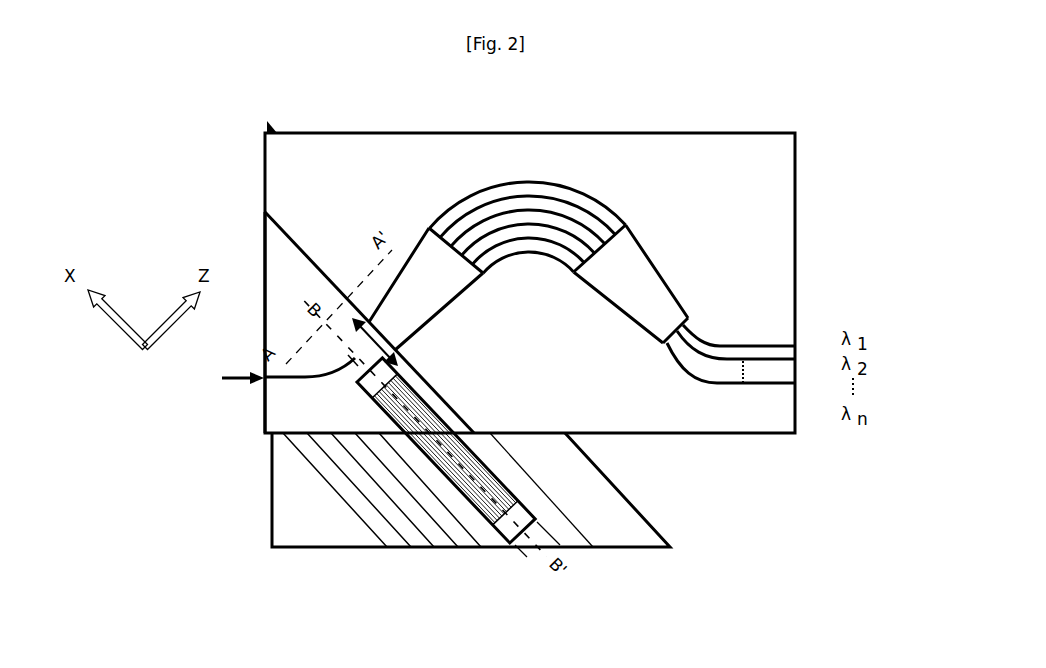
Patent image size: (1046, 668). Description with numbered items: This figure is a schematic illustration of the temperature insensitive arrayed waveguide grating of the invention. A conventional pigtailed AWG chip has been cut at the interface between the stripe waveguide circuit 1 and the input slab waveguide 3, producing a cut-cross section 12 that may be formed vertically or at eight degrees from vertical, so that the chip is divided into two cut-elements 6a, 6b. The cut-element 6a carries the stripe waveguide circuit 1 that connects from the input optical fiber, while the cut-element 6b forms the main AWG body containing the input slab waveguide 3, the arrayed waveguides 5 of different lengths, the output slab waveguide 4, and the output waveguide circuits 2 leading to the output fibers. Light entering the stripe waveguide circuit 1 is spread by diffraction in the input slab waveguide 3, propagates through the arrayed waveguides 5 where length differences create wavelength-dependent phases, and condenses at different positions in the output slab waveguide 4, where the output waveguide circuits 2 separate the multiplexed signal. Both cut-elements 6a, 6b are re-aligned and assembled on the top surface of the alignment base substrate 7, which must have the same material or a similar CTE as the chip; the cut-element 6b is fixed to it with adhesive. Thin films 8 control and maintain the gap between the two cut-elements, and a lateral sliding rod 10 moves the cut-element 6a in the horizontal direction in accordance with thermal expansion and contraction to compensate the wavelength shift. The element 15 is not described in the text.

The stripe waveguide circuit 1 is at (303, 378).
The output waveguide circuits 2 is at (745, 353).
The input slab waveguide 3 is at (440, 283).
The output slab waveguide 4 is at (633, 277).
The arrayed waveguides 5 is at (543, 245).
The cut-element 6a is at (283, 287).
The cut-element 6b is at (457, 163).
The alignment base substrate 7 is at (290, 523).
The thin films 8 is at (294, 236).
The lateral sliding rod 10 is at (470, 512).
The cut-cross section 12 is at (265, 210).
The adhesive layer 15 is at (388, 527).